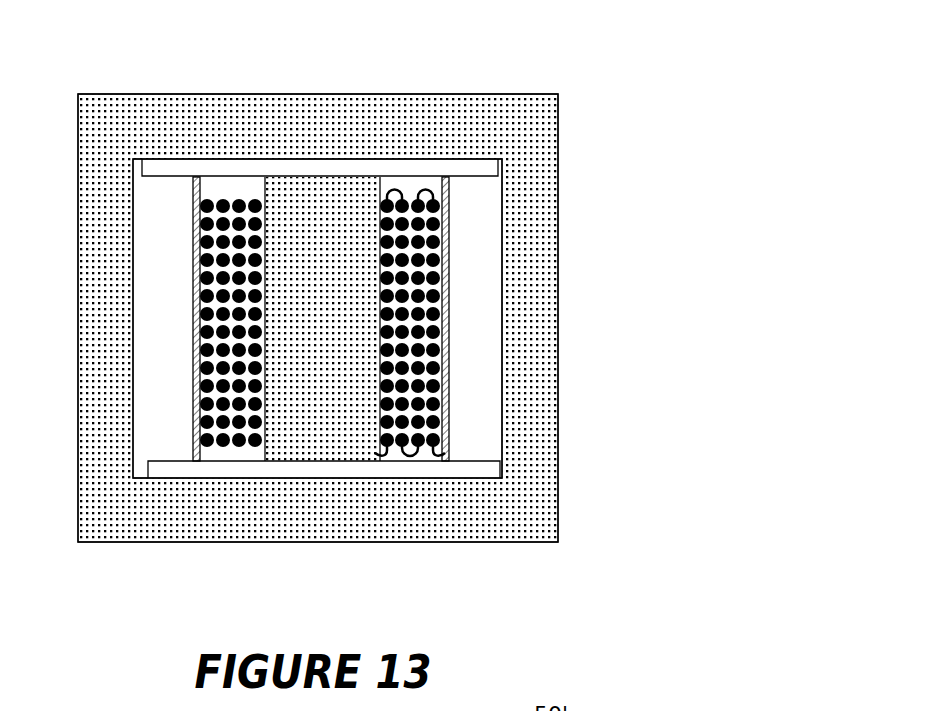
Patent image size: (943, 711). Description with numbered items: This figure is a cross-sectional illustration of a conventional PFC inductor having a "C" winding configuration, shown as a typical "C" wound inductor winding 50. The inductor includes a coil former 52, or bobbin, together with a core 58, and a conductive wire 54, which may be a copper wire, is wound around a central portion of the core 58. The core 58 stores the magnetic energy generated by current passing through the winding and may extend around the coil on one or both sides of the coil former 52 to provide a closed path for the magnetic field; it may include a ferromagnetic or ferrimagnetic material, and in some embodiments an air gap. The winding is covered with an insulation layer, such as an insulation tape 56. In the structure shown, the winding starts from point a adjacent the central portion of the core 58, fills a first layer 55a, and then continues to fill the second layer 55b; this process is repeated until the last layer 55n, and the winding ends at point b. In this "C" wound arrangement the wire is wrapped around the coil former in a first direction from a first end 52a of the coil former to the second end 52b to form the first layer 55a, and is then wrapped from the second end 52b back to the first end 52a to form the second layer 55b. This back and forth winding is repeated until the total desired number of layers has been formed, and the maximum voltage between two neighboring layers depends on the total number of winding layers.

The inductor winding 50 is at (520, 56).
The core 58 is at (90, 280).
The coil former 52 is at (167, 468).
The first end of the coil former 52a is at (310, 465).
The second end of the coil former 52b is at (272, 165).
The conductive wire 54 is at (431, 313).
The insulation tape 56 is at (449, 234).
The first layer 55a is at (378, 197).
The second layer 55b is at (404, 193).
The last layer 55n is at (437, 200).
The starting point of the winding a is at (375, 453).
The ending point of the winding b is at (445, 453).